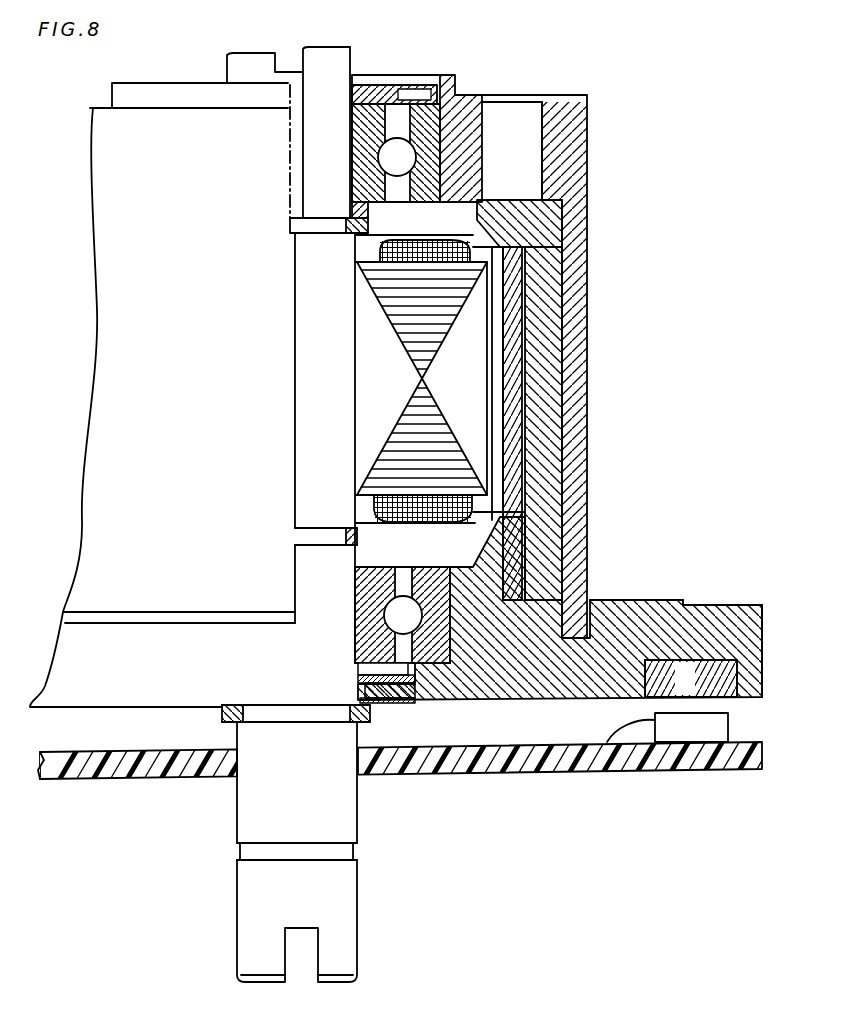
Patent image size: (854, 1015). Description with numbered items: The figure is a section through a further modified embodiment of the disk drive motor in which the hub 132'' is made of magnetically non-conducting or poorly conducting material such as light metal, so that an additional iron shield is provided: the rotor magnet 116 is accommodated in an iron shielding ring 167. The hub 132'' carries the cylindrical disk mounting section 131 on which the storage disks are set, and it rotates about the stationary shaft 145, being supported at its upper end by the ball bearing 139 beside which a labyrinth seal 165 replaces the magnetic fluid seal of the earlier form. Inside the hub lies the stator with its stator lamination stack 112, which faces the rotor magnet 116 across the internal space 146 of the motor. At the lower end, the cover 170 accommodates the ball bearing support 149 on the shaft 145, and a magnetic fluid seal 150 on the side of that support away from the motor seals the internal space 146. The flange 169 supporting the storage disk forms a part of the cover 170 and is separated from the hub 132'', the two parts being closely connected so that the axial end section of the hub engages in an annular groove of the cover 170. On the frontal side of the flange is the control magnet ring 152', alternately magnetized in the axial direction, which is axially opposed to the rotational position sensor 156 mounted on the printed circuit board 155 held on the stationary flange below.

The stator lamination stack 112 is at (487, 330).
The rotor magnet 116 is at (520, 292).
The disk mounting section 131 is at (589, 233).
The hub 132'' is at (619, 419).
The ball bearing 139 is at (457, 98).
The stationary shaft 145 is at (347, 798).
The internal space of the motor 146 is at (443, 551).
The ball bearing support 149 is at (353, 632).
The magnetic fluid seal 150 is at (402, 702).
The control magnet ring 152' is at (671, 628).
The printed circuit board 155 is at (553, 770).
The rotational position sensor 156 is at (703, 730).
The labyrinth seal 165 is at (398, 92).
The iron shielding ring 167 is at (548, 380).
The flange 169 is at (710, 620).
The cover 170 is at (557, 668).